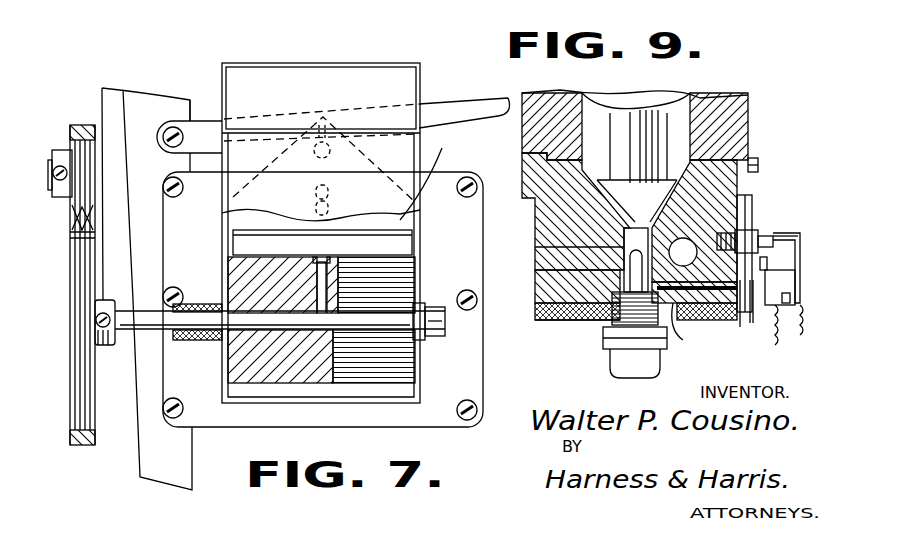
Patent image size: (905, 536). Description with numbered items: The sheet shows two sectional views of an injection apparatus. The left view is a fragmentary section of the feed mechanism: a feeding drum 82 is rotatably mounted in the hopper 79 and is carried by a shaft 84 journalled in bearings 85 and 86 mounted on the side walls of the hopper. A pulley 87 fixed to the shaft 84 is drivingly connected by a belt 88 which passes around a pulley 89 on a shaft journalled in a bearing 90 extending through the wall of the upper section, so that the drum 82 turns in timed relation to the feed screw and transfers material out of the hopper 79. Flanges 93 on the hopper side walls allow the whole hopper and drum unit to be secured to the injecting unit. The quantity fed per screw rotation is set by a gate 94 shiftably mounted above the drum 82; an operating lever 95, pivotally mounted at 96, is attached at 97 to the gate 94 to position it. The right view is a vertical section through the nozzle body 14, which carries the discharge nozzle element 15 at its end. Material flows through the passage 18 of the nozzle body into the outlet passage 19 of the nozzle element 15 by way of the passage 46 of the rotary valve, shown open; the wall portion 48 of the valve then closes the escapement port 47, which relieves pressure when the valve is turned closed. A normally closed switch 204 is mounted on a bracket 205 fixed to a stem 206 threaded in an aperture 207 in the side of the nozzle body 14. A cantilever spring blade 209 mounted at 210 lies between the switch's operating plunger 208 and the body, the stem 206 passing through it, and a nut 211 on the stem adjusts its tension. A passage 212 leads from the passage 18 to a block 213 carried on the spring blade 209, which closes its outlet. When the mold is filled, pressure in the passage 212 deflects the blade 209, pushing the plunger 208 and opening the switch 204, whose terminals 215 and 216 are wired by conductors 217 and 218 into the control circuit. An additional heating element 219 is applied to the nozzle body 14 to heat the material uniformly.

In FIG. 9, the nozzle body 14 is at (727, 196).
In FIG. 9, the discharge nozzle element 15 is at (653, 370).
In FIG. 9, the passage 18 is at (630, 298).
In FIG. 9, the outlet passage 19 is at (668, 262).
In FIG. 9, the passage 46 is at (592, 322).
In FIG. 9, the escapement port 47 is at (540, 273).
In FIG. 9, the wall portion 48 is at (540, 243).
In FIG. 7, the hopper 79 is at (277, 193).
In FIG. 7, the feeding drum 82 is at (397, 357).
In FIG. 7, the shaft 84 is at (272, 320).
In FIG. 7, the bearing 85 is at (430, 310).
In FIG. 7, the bearing 86 is at (193, 340).
In FIG. 7, the pulley 87 is at (93, 432).
In FIG. 7, the belt 88 is at (80, 123).
In FIG. 7, the pulley 89 is at (66, 150).
In FIG. 7, the bearing 90 is at (50, 178).
In FIG. 7, the flanges 93 is at (180, 229).
In FIG. 7, the gate 94 is at (428, 175).
In FIG. 7, the operating lever 95 is at (198, 125).
In FIG. 7, the pivot 96 is at (168, 124).
In FIG. 7, the attachment point 97 is at (322, 118).
In FIG. 9, the switch 204 is at (783, 287).
In FIG. 9, the bracket 205 is at (797, 237).
In FIG. 9, the stem 206 is at (778, 238).
In FIG. 9, the aperture 207 is at (745, 232).
In FIG. 9, the operating plunger 208 is at (762, 288).
In FIG. 9, the cantilever spring blade 209 is at (757, 199).
In FIG. 9, the mounting point 210 is at (762, 165).
In FIG. 9, the nut 211 is at (758, 235).
In FIG. 9, the passage 212 is at (673, 303).
In FIG. 9, the block 213 is at (740, 300).
In FIG. 9, the terminal 215 is at (753, 300).
In FIG. 9, the terminal 216 is at (790, 298).
In FIG. 9, the conductor 217 is at (787, 343).
In FIG. 9, the conductor 218 is at (810, 340).
In FIG. 9, the heating element 219 is at (566, 322).